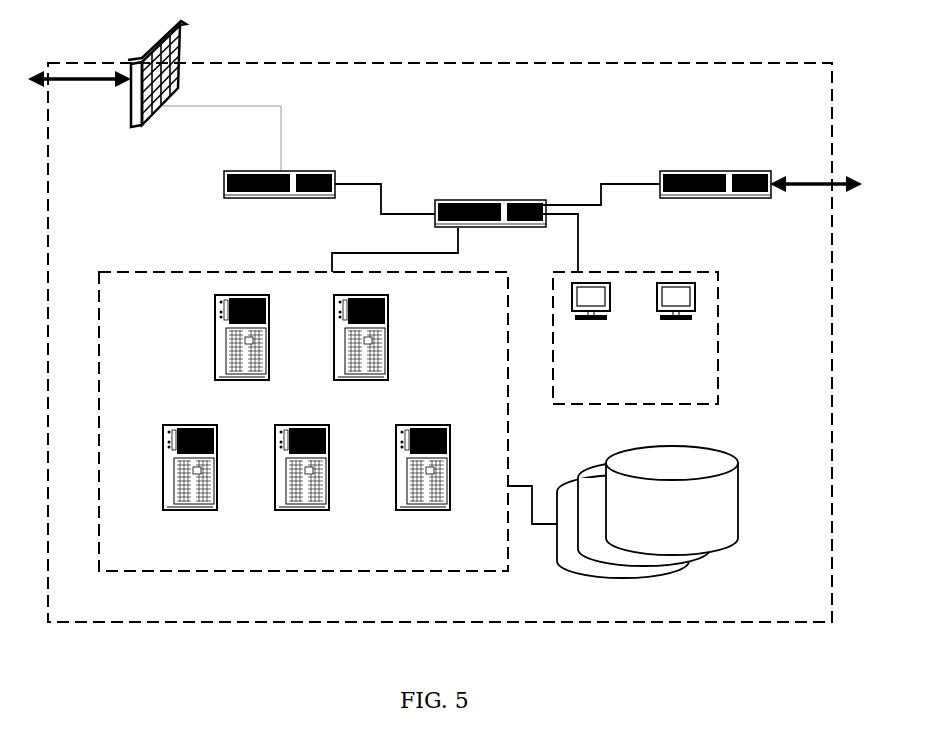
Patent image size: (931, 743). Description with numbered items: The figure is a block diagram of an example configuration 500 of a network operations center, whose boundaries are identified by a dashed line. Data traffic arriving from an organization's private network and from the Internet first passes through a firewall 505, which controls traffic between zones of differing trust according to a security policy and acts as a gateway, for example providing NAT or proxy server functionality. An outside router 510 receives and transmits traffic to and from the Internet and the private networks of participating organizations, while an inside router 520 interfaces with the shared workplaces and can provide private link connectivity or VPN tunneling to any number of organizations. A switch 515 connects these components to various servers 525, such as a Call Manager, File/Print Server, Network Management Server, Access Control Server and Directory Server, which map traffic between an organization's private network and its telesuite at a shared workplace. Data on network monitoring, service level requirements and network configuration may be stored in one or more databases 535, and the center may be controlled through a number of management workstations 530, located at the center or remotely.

The configuration of the network operations center 500 is at (740, 670).
The firewall 505 is at (131, 113).
The outside router 510 is at (224, 188).
The switch 515 is at (474, 200).
The inside router 520 is at (662, 197).
The servers 525 is at (420, 572).
The management workstations 530 is at (645, 405).
The databases 535 is at (627, 580).